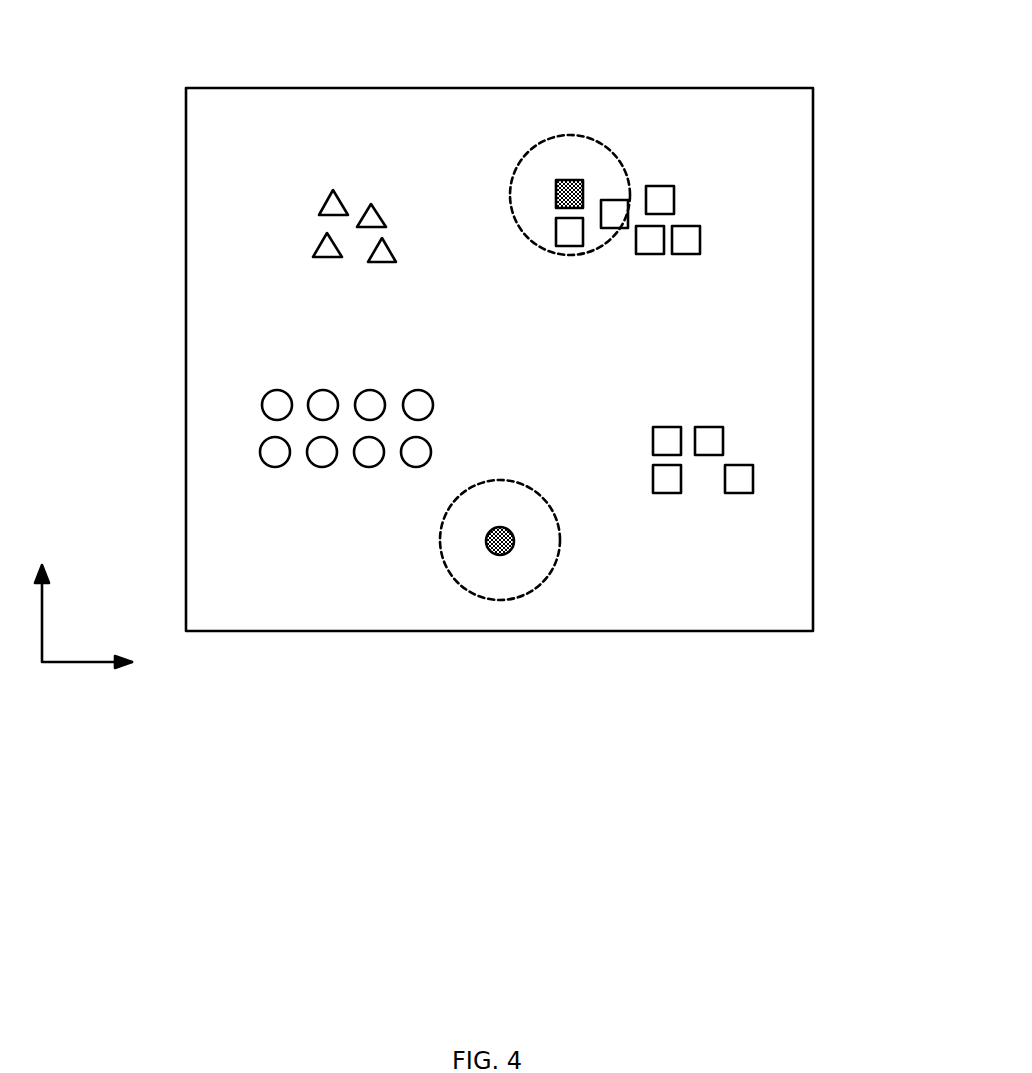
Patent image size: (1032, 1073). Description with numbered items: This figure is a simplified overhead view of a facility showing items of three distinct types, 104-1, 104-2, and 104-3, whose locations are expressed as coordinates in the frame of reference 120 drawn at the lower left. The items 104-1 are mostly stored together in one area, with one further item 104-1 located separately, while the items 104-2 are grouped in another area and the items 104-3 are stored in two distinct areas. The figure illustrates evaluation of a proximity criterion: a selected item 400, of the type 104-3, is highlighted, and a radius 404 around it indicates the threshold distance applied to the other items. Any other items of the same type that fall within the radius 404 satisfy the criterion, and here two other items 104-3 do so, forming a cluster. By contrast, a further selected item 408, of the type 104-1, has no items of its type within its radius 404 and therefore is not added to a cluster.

The items of a first type 104-1 is at (258, 424).
The items of a second type 104-2 is at (305, 226).
The items of a third type 104-3 is at (717, 236).
The frame of reference 120 is at (58, 662).
The selected item 400 is at (570, 180).
The radius 404 is at (556, 187).
The further selected item 408 is at (485, 541).